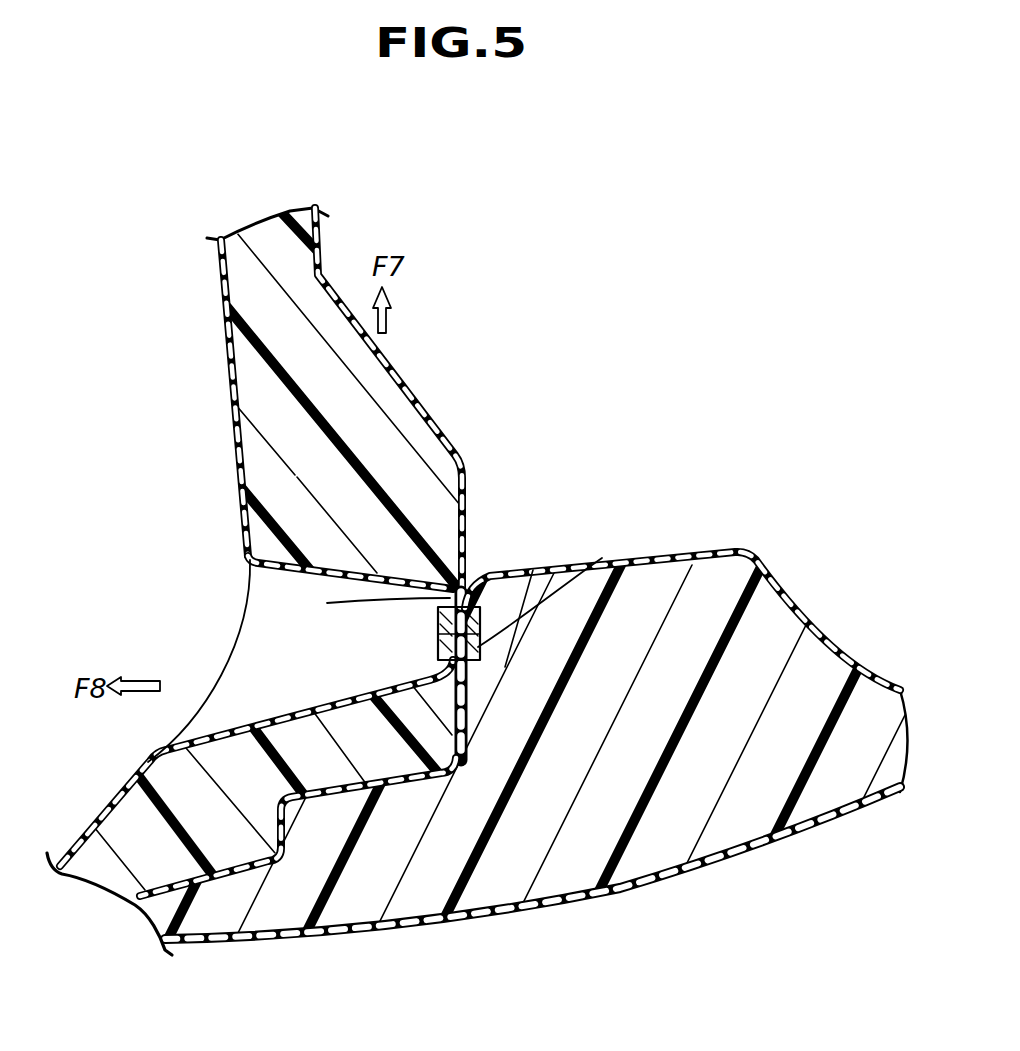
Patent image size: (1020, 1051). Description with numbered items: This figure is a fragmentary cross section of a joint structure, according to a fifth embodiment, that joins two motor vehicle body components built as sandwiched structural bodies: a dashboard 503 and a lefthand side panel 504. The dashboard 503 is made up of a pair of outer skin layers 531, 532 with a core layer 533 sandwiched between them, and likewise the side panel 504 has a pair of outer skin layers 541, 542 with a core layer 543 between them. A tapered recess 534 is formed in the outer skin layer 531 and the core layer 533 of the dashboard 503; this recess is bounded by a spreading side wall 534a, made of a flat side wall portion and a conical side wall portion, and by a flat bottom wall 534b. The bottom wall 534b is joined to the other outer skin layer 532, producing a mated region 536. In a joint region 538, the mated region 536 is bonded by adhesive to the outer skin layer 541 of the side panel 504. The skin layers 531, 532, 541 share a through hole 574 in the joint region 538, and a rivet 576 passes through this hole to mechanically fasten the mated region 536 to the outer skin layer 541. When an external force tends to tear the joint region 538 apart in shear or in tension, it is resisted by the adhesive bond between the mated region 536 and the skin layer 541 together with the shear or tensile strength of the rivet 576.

The dashboard 503 is at (107, 890).
The lefthand side panel 504 is at (852, 780).
The outer skin layer 531 is at (232, 368).
The outer skin layer 532 is at (415, 400).
The core layer 533 is at (320, 468).
The tapered recess 534 is at (160, 737).
The spreading side wall 534a is at (252, 562).
The flat bottom wall 534b is at (327, 603).
The mated region 536 is at (440, 656).
The joint region 538 is at (483, 583).
The outer skin layer 541 is at (758, 565).
The outer skin layer 542 is at (677, 873).
The core layer 543 is at (773, 647).
The through hole 574 is at (533, 570).
The rivet 576 is at (602, 558).